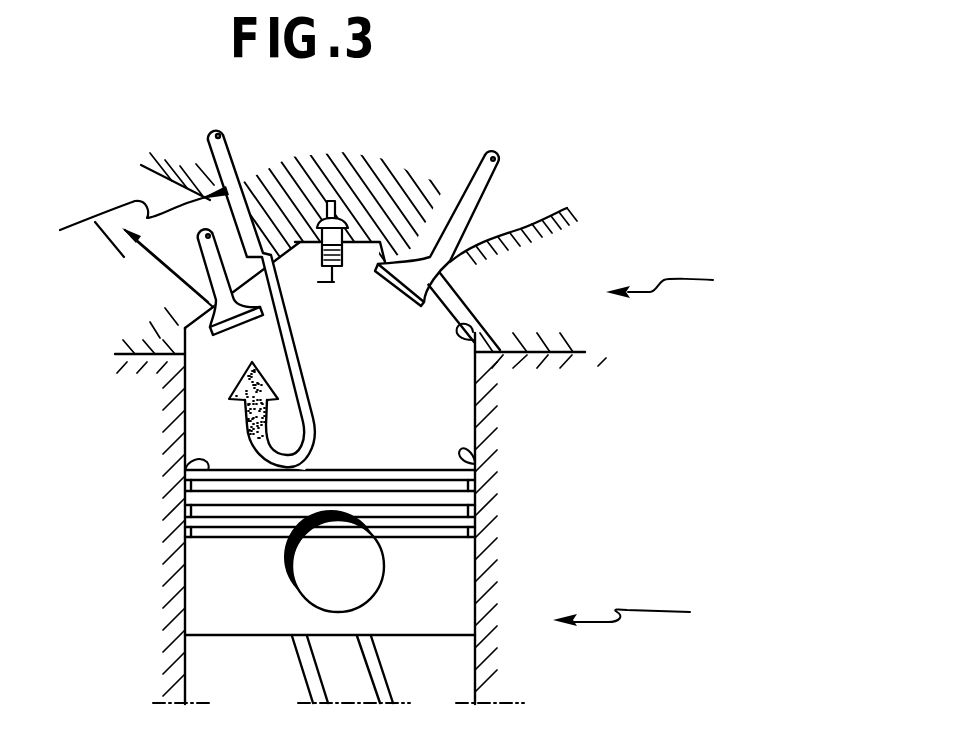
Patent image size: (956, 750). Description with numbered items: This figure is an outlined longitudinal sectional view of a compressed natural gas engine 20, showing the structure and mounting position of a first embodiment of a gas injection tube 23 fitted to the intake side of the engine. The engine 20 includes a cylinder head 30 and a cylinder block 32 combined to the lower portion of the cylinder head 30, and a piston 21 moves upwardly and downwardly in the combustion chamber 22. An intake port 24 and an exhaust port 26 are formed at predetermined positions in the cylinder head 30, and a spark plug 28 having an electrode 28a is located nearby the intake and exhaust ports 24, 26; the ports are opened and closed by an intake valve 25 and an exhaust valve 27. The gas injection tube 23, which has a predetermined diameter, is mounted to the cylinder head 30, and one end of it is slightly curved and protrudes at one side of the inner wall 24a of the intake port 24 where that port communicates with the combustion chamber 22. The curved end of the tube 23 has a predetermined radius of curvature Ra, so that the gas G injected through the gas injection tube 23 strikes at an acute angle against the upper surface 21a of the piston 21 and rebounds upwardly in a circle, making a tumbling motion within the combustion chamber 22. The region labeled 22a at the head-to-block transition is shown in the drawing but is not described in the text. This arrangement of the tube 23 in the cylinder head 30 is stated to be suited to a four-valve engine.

The compressed natural gas engine 20 is at (540, 113).
The piston 21 is at (453, 582).
The upper surface of the piston 21a is at (186, 469).
The combustion chamber 22 is at (475, 462).
The cylinder head 22a is at (478, 337).
The gas injection tube 23 is at (236, 172).
The intake port 24 is at (190, 250).
The inner wall of the intake port 24a is at (123, 228).
The intake valve 25 is at (197, 267).
The exhaust port 26 is at (493, 220).
The exhaust valve 27 is at (460, 206).
The spark plug 28 is at (333, 203).
The electrode 28a is at (337, 283).
The cylinder head 30 is at (677, 284).
The cylinder block 32 is at (638, 615).
The gas G is at (312, 412).
The radius of curvature Ra is at (134, 212).